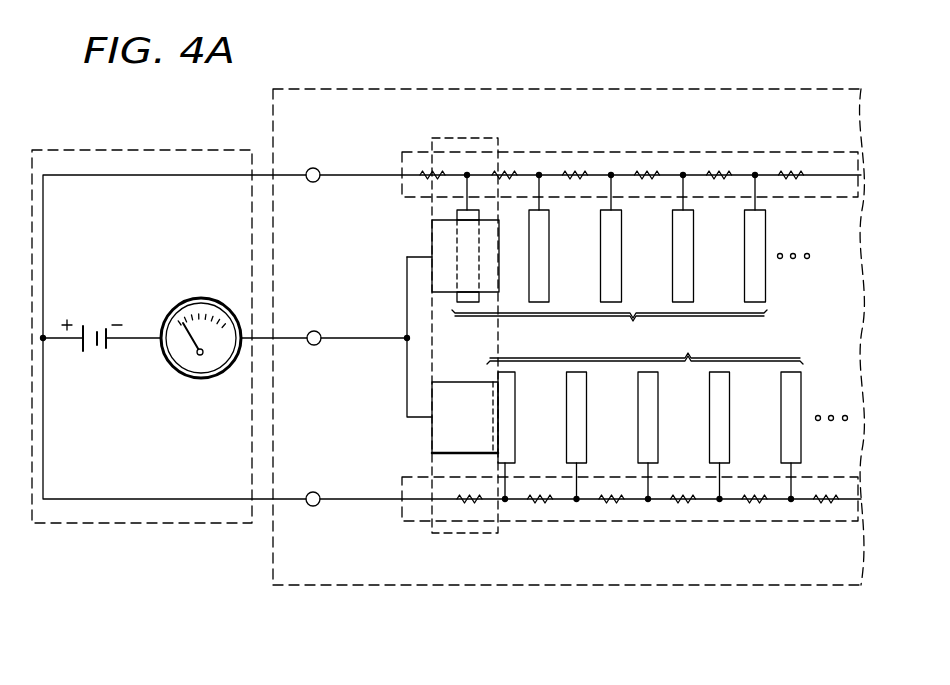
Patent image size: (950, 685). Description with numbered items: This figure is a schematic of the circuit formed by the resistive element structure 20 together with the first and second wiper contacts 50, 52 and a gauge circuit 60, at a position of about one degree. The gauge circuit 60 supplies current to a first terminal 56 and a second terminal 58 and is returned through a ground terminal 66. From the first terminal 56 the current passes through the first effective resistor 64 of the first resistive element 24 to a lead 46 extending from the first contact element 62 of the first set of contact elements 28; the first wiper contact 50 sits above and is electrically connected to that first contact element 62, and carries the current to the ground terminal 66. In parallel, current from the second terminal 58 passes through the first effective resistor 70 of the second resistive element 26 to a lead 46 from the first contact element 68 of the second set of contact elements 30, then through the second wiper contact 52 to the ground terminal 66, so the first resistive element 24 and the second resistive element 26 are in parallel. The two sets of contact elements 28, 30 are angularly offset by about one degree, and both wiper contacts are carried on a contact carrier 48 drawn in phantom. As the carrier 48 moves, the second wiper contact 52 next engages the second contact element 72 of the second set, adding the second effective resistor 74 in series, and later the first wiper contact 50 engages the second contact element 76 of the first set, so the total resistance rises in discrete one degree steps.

The resistive element structure 20 is at (565, 88).
The first resistive element 24 is at (633, 523).
The second resistive element 26 is at (638, 150).
The first set of contact elements 28 is at (645, 344).
The second set of contact elements 30 is at (609, 331).
The lead 46 is at (463, 178).
The contact carrier 48 is at (468, 535).
The first wiper contact 50 is at (432, 433).
The second wiper contact 52 is at (432, 275).
The first terminal 56 is at (315, 507).
The second terminal 58 is at (310, 168).
The gauge circuit 60 is at (132, 148).
The first contact element of the first set 62 is at (515, 417).
The first effective resistor 64 is at (462, 505).
The ground terminal 66 is at (312, 330).
The first contact element of the second set 68 is at (457, 243).
The first effective resistor 70 is at (425, 170).
The second contact element of the second set 72 is at (549, 257).
The second effective resistor 74 is at (507, 170).
The second contact element of the first set 76 is at (586, 417).